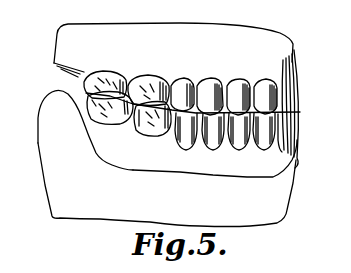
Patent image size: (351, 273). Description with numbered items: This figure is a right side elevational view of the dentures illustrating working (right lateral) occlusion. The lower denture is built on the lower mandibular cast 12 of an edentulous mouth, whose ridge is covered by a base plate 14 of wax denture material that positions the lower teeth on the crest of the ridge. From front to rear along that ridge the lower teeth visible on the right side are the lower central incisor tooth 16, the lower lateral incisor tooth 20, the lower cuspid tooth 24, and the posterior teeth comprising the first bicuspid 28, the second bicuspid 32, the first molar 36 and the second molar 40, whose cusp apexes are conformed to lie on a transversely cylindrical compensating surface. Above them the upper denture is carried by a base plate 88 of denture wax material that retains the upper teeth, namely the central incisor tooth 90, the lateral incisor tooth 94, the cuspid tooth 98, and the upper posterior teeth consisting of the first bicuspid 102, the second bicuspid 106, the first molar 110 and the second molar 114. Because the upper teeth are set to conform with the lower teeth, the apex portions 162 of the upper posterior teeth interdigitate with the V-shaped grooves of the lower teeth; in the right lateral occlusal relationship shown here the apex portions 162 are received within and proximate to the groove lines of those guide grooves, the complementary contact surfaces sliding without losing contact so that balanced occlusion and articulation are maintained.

The lower mandibular cast 12 is at (80, 213).
The base plate 14 is at (84, 129).
The lower central incisor tooth 16 is at (297, 137).
The lower lateral incisor tooth 20 is at (267, 152).
The lower cuspid tooth 24 is at (243, 151).
The first bicuspid 28 is at (215, 151).
The second bicuspid 32 is at (189, 151).
The first molar 36 is at (155, 133).
The second molar 40 is at (117, 122).
The base plate 88 is at (296, 54).
The central incisor tooth 90 is at (297, 94).
The lateral incisor tooth 94 is at (266, 82).
The cuspid tooth 98 is at (238, 81).
The first bicuspid 102 is at (207, 82).
The second bicuspid 106 is at (176, 79).
The first molar 110 is at (141, 77).
The second molar 114 is at (106, 70).
The apex portions 162 is at (191, 140).